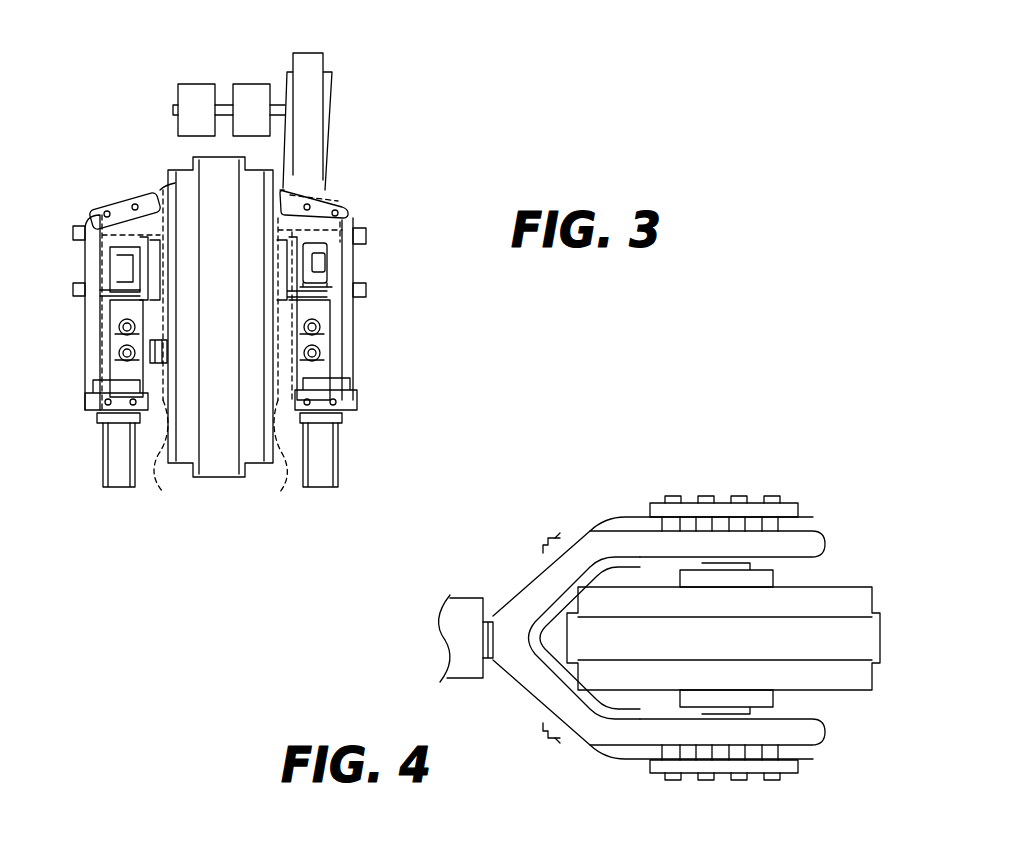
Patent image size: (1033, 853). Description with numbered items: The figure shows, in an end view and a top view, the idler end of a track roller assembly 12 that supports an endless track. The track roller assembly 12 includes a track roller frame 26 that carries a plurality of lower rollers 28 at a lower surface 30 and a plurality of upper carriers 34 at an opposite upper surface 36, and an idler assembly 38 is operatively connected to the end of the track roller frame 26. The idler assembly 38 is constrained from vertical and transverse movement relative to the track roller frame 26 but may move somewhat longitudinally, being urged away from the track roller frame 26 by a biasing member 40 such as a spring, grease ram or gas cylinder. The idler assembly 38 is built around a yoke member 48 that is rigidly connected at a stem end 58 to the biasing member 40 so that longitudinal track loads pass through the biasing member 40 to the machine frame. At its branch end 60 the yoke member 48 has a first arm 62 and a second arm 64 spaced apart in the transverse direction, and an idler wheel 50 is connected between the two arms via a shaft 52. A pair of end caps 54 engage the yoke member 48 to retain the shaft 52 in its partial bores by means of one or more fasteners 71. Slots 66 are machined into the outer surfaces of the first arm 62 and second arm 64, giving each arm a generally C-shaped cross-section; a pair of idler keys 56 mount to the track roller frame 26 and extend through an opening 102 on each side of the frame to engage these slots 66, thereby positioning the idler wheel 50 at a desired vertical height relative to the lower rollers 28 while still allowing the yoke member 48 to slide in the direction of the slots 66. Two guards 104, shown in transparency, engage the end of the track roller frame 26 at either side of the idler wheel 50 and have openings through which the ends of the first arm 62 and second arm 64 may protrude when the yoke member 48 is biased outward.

In FIG. 3, the track roller assembly 12 is at (486, 140).
In FIG. 3, the track roller frame 26 is at (340, 395).
In FIG. 3, the lower rollers 28 is at (115, 455).
In FIG. 3, the lower surface 30 is at (330, 420).
In FIG. 3, the upper carriers 34 is at (253, 84).
In FIG. 3, the upper surface 36 is at (332, 250).
In FIG. 3, the idler assembly 38 is at (237, 522).
In FIG. 4, the idler assembly 38 is at (806, 461).
In FIG. 4, the biasing member 40 is at (445, 655).
In FIG. 3, the yoke member 48 is at (120, 290).
In FIG. 4, the yoke member 48 is at (545, 695).
In FIG. 3, the idler wheel 50 is at (236, 317).
In FIG. 4, the idler wheel 50 is at (736, 649).
In FIG. 3, the shaft 52 is at (158, 345).
In FIG. 4, the shaft 52 is at (760, 568).
In FIG. 3, the end caps 54 is at (125, 322).
In FIG. 3, the idler keys 56 is at (110, 268).
In FIG. 4, the idler keys 56 is at (717, 510).
In FIG. 4, the stem end 58 is at (494, 612).
In FIG. 4, the branch end 60 is at (818, 545).
In FIG. 3, the first arm 62 is at (324, 250).
In FIG. 4, the first arm 62 is at (595, 547).
In FIG. 3, the second arm 64 is at (128, 250).
In FIG. 4, the second arm 64 is at (620, 728).
In FIG. 3, the slots 66 is at (98, 212).
In FIG. 3, the fasteners 71 is at (125, 332).
In FIG. 3, the opening 102 is at (76, 232).
In FIG. 3, the guards 104 is at (234, 460).